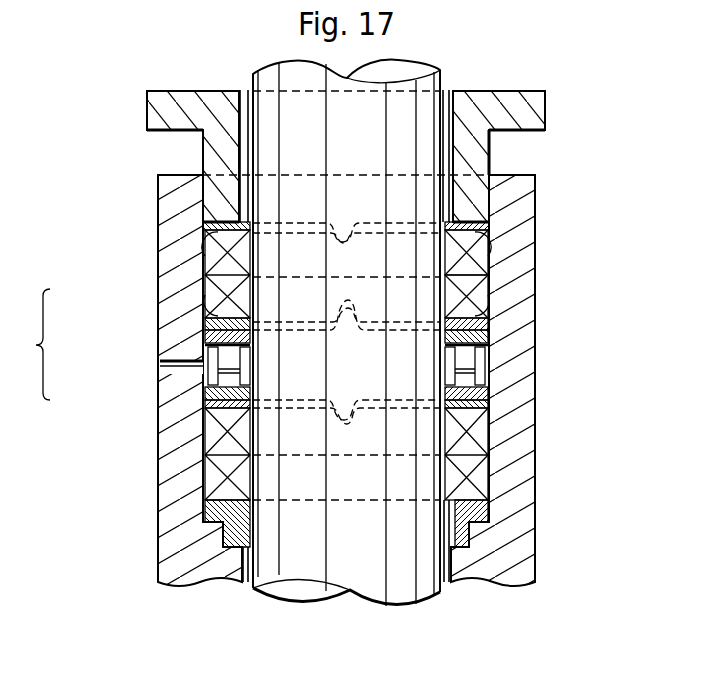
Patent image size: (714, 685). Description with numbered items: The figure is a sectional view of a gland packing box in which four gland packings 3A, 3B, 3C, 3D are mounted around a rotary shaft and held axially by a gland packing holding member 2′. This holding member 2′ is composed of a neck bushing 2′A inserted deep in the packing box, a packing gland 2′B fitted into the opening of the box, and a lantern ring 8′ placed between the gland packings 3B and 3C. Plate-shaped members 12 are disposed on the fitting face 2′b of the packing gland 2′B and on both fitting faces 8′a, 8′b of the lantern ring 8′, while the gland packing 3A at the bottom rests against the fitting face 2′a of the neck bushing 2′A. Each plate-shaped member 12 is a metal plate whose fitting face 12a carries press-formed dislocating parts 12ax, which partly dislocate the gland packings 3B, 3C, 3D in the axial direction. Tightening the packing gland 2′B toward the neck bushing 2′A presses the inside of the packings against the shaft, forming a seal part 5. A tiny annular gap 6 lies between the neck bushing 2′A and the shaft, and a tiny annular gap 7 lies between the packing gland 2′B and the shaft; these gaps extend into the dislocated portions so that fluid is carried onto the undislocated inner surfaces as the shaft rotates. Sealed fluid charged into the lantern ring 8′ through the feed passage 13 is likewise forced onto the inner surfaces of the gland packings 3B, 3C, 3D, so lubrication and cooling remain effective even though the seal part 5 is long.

The gland packing holding member 2′ is at (36, 344).
The neck bushing 2′A is at (160, 520).
The packing gland 2′B is at (147, 115).
The fitting face of the neck bushing 2′a is at (215, 505).
The fitting face of the packing gland 2′b is at (212, 248).
The gland packing 3A is at (503, 515).
The gland packing 3B is at (483, 485).
The gland packing 3C is at (478, 302).
The gland packing 3D is at (478, 263).
The seal part 5 is at (497, 310).
The tiny annular gap 6 is at (252, 527).
The tiny annular gap 7 is at (244, 92).
The lantern ring 8′ is at (203, 400).
The fitting face of the lantern ring 8′a is at (232, 426).
The fitting face of the lantern ring 8′b is at (232, 316).
The plate-shaped member 12 is at (490, 178).
The fitting face of the plate-shaped member 12a is at (528, 230).
The dislocating part 12ax is at (350, 222).
The feed passage 13 is at (204, 360).